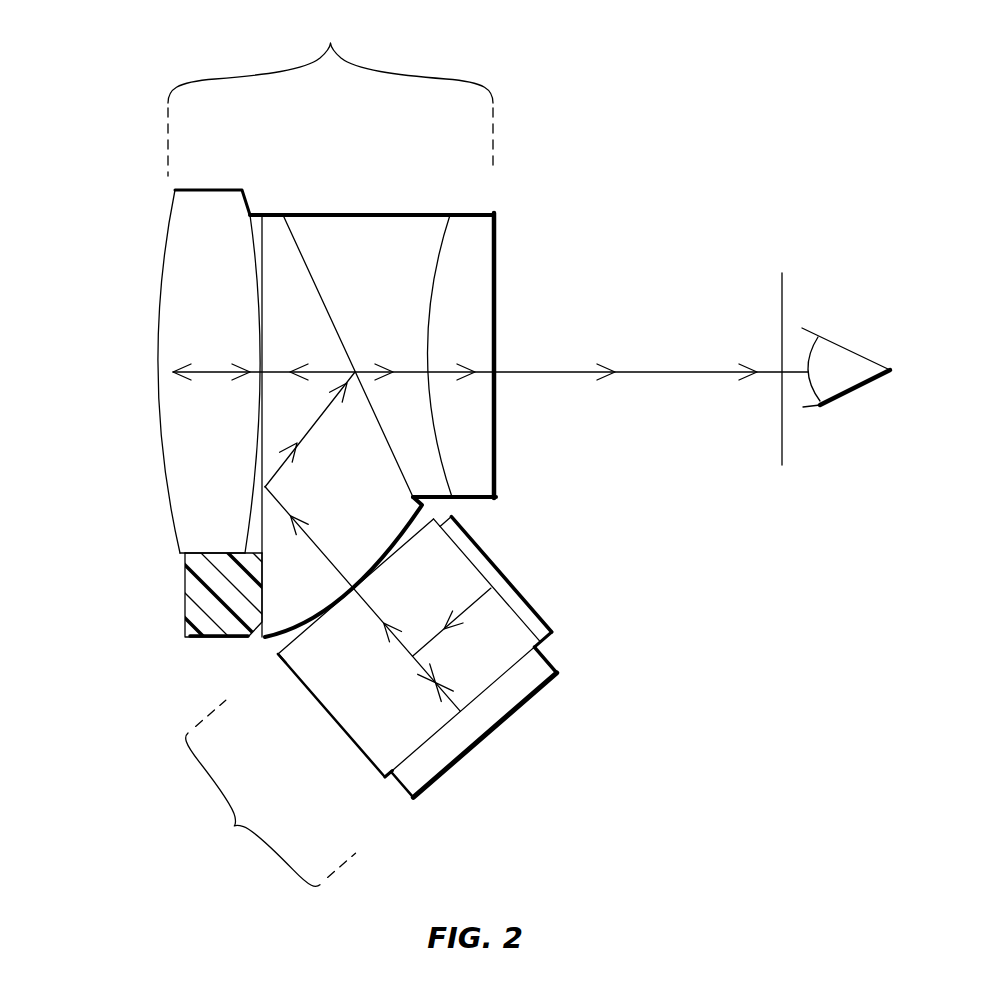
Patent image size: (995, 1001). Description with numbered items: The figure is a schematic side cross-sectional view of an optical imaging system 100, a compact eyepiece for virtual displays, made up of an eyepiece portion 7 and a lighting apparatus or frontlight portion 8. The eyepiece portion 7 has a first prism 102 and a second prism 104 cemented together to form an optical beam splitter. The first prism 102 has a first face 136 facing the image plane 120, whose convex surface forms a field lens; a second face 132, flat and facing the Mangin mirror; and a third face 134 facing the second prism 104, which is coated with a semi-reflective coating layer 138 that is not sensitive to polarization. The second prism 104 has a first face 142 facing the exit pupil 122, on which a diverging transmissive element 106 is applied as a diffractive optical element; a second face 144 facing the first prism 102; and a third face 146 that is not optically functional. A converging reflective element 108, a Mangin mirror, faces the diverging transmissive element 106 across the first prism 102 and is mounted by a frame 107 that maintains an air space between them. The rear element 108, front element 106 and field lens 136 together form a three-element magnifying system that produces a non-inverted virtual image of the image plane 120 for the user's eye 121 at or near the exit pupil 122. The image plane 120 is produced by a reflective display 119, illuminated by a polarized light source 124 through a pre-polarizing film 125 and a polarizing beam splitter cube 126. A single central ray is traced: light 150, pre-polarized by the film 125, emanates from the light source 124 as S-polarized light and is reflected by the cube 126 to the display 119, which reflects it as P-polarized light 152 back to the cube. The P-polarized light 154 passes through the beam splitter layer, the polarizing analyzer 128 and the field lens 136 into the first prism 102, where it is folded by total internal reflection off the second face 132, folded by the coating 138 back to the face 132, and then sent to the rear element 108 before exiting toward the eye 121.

The eyepiece portion 7 is at (330, 94).
The frontlight portion 8 is at (261, 801).
The optical imaging system 100 is at (128, 254).
The first prism 102 is at (333, 394).
The second prism 104 is at (437, 324).
The diverging transmissive element 106 is at (498, 449).
The frame 107 is at (183, 602).
The converging reflective element 108 is at (158, 415).
The display 119 is at (497, 731).
The image plane 120 is at (407, 756).
The eye 121 is at (856, 352).
The exit pupil 122 is at (781, 437).
The polarized light source 124 is at (553, 628).
The pre-polarizing film 125 is at (515, 612).
The polarizing beam splitter cube 126 is at (434, 658).
The polarizing analyzer 128 is at (276, 650).
The second face 132 is at (264, 543).
The third face 134 is at (404, 492).
The first face 136 is at (392, 556).
The semi-reflective coating layer 138 is at (372, 420).
The first face 142 is at (433, 283).
The second face 144 is at (341, 332).
The third face 146 is at (320, 216).
The light 150 is at (467, 611).
The P-polarized light 152 is at (438, 684).
The P-polarized light 154 is at (276, 370).